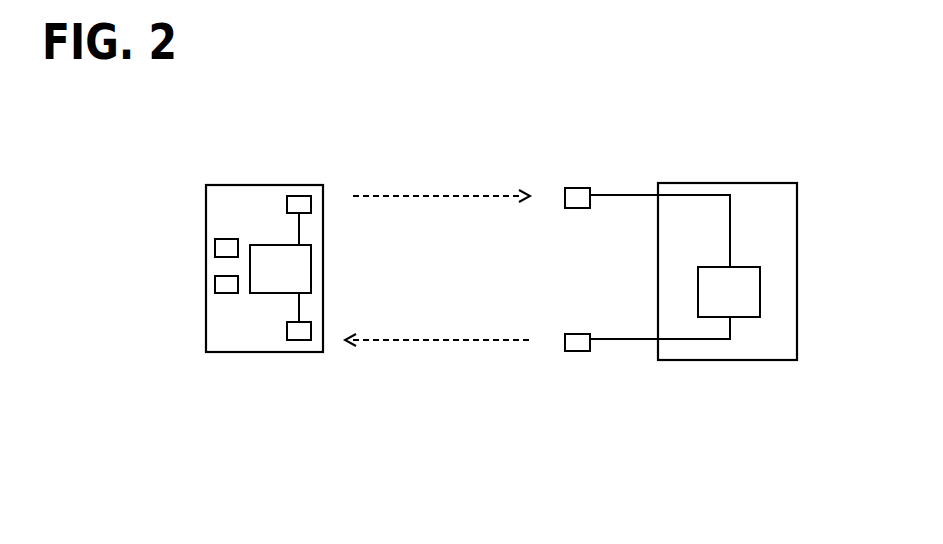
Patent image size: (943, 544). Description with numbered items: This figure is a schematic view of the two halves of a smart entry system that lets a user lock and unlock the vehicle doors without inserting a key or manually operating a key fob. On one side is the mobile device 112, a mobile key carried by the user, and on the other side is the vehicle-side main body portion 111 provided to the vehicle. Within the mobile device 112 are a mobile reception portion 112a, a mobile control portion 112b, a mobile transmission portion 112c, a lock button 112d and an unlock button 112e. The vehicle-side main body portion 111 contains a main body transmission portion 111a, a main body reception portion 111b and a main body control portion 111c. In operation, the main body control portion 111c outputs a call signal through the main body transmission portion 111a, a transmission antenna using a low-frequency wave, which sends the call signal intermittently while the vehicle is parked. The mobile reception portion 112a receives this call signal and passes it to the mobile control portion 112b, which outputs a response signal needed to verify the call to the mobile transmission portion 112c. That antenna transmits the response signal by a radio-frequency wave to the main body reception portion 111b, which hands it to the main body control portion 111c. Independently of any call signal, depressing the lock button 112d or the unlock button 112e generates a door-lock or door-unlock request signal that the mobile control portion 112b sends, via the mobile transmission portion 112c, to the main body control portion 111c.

The vehicle-side main body portion 111 is at (683, 183).
The main body transmission portion 111a is at (578, 351).
The main body reception portion 111b is at (573, 188).
The main body control portion 111c is at (760, 292).
The mobile device 112 is at (234, 185).
The mobile reception portion 112a is at (297, 340).
The mobile control portion 112b is at (258, 293).
The mobile transmission portion 112c is at (299, 196).
The lock button 112d is at (215, 248).
The unlock button 112e is at (215, 286).